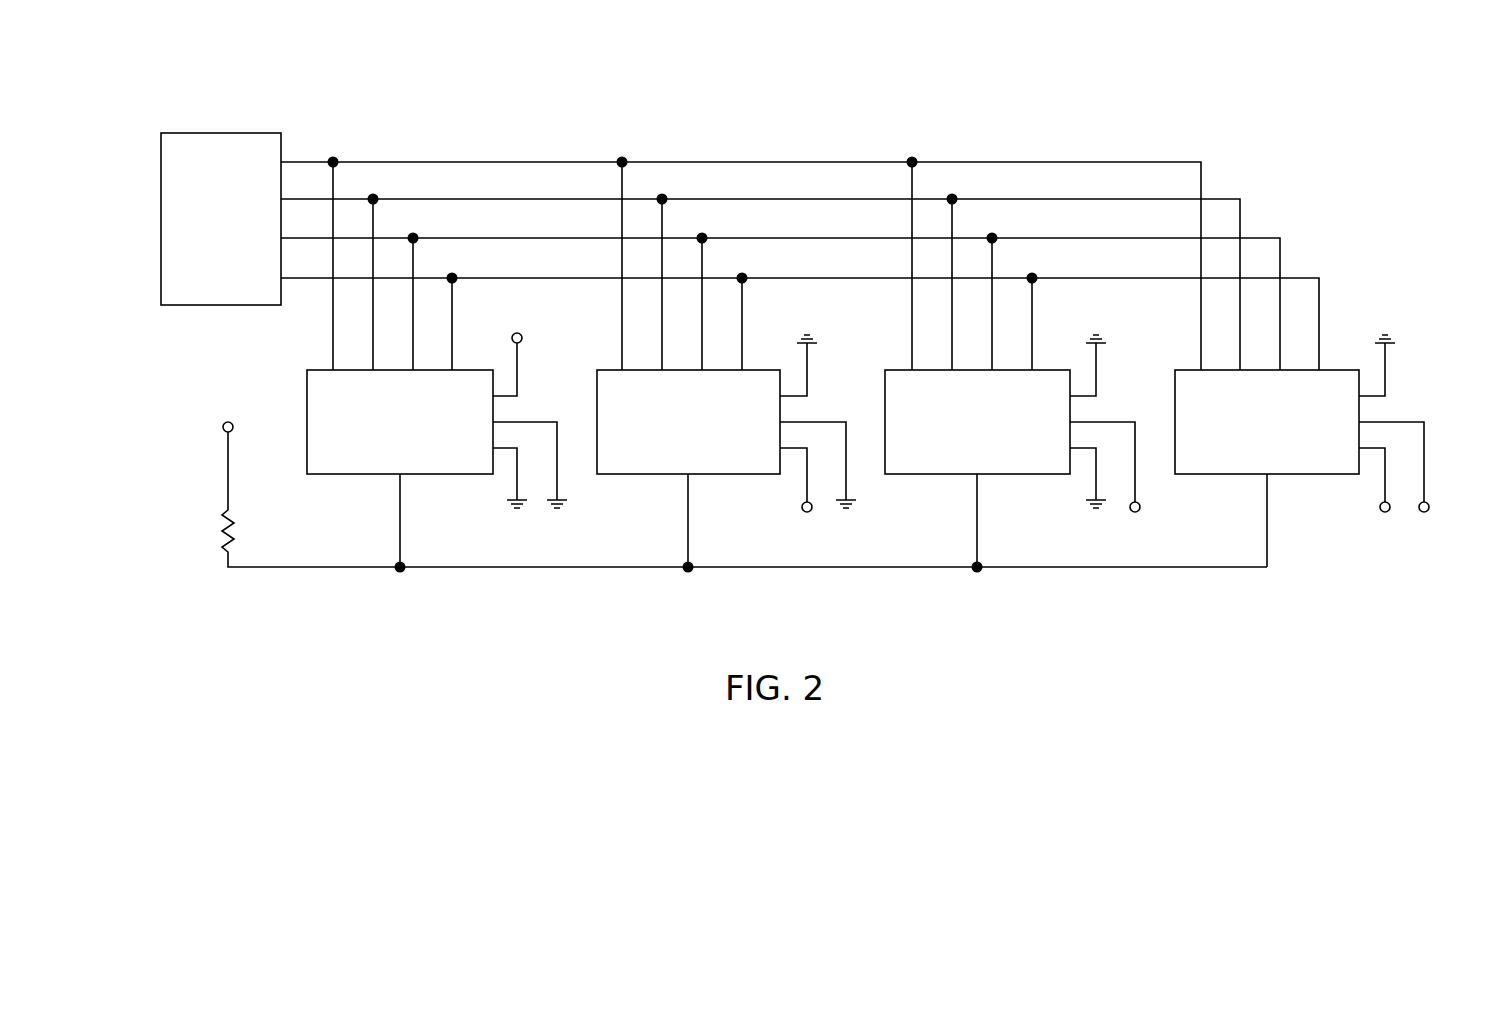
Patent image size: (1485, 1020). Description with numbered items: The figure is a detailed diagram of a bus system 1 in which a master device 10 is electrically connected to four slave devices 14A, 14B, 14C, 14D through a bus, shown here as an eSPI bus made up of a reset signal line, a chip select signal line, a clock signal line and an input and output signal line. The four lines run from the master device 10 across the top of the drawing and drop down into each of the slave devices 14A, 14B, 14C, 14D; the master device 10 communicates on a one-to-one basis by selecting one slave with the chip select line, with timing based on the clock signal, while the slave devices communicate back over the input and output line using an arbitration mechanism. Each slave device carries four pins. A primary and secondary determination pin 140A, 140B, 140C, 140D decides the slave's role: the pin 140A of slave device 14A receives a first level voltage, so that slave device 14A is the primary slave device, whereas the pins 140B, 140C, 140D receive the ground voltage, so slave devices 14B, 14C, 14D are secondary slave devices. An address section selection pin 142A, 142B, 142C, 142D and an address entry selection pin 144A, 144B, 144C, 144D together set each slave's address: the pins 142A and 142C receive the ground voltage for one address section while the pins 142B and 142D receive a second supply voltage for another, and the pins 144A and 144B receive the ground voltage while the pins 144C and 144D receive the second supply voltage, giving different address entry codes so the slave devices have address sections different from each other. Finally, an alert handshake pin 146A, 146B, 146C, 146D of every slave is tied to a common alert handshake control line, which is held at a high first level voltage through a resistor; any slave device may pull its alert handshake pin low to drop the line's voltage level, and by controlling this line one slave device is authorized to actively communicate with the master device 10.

The bus system 1 is at (1021, 69).
The master device 10 is at (161, 157).
The slave device 14A is at (381, 409).
The slave device 14B is at (669, 409).
The slave device 14C is at (958, 409).
The slave device 14D is at (1248, 409).
The primary and secondary determination pin 140A is at (518, 383).
The primary and secondary determination pin 140B is at (808, 383).
The primary and secondary determination pin 140C is at (1098, 383).
The primary and secondary determination pin 140D is at (1386, 383).
The address section selection pin 142A is at (508, 473).
The address section selection pin 142B is at (798, 473).
The address section selection pin 142C is at (1087, 473).
The address section selection pin 142D is at (1376, 473).
The address entry selection pin 144A is at (560, 398).
The address entry selection pin 144B is at (850, 398).
The address entry selection pin 144C is at (1140, 398).
The address entry selection pin 144D is at (1428, 398).
The alert handshake pin 146A is at (397, 512).
The alert handshake pin 146B is at (687, 512).
The alert handshake pin 146C is at (975, 512).
The alert handshake pin 146D is at (1265, 512).